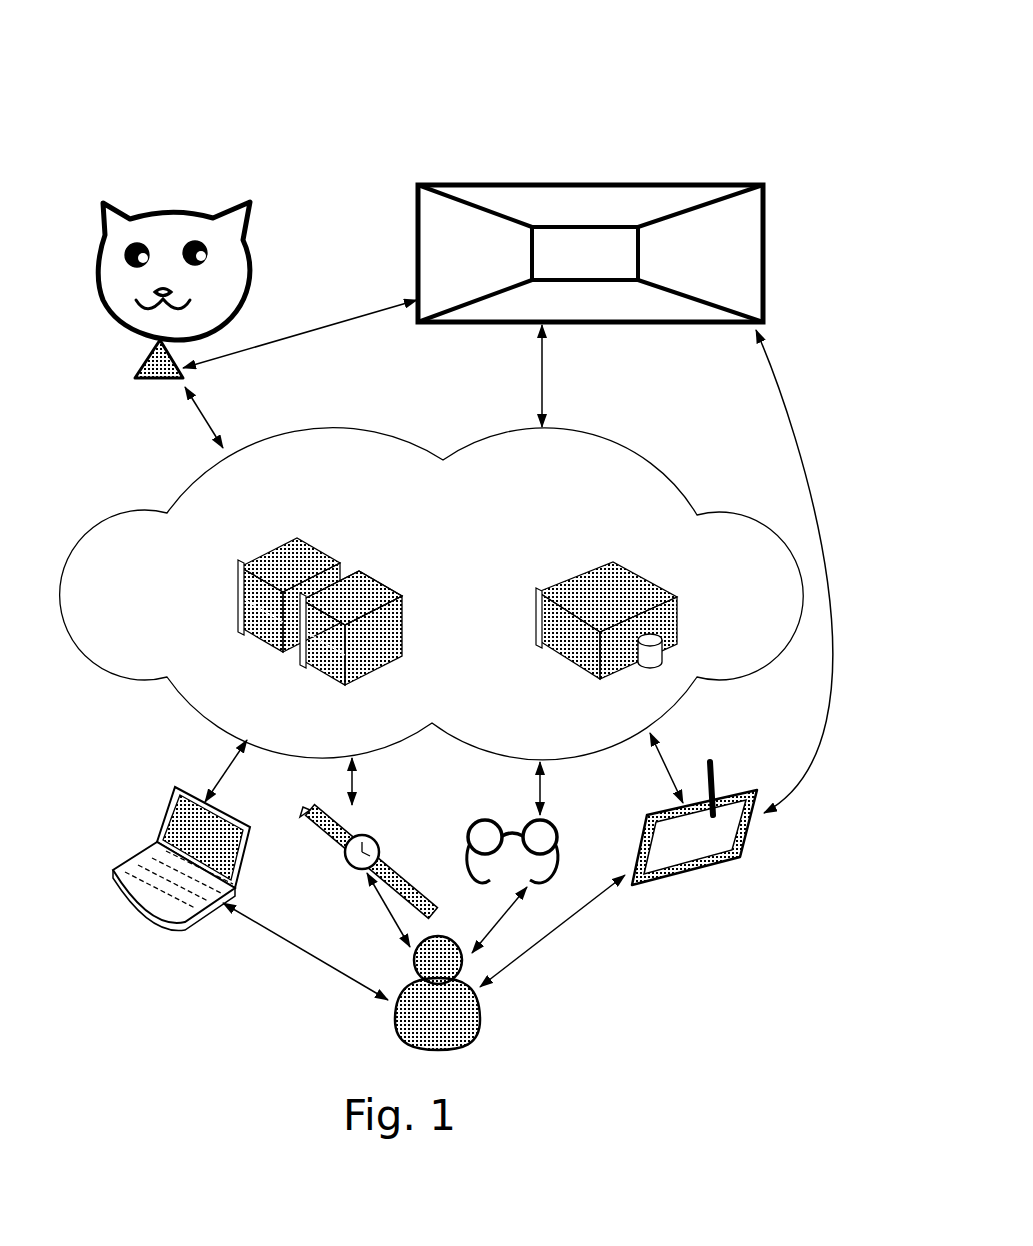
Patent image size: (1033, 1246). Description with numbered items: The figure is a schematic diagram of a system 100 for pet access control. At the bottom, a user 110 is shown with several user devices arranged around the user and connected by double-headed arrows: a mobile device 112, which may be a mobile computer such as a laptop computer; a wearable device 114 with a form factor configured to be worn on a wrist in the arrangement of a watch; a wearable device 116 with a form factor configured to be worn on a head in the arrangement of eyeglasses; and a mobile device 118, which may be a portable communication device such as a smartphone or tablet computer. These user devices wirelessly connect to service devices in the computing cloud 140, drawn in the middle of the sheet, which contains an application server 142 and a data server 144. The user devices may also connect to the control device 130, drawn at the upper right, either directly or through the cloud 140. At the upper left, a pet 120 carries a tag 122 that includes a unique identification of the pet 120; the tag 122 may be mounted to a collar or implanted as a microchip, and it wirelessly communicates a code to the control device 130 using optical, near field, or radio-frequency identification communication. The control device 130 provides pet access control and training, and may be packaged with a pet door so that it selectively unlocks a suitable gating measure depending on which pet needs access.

The system 100 is at (217, 68).
The user 110 is at (395, 1030).
The mobile device 112 is at (175, 790).
The wearable device 114 is at (345, 860).
The wearable device 116 is at (560, 826).
The mobile device 118 is at (741, 790).
The pet 120 is at (98, 270).
The tag 122 is at (135, 378).
The control device 130 is at (763, 240).
The computing cloud 140 is at (432, 594).
The application server 142 is at (240, 625).
The data server 144 is at (537, 608).